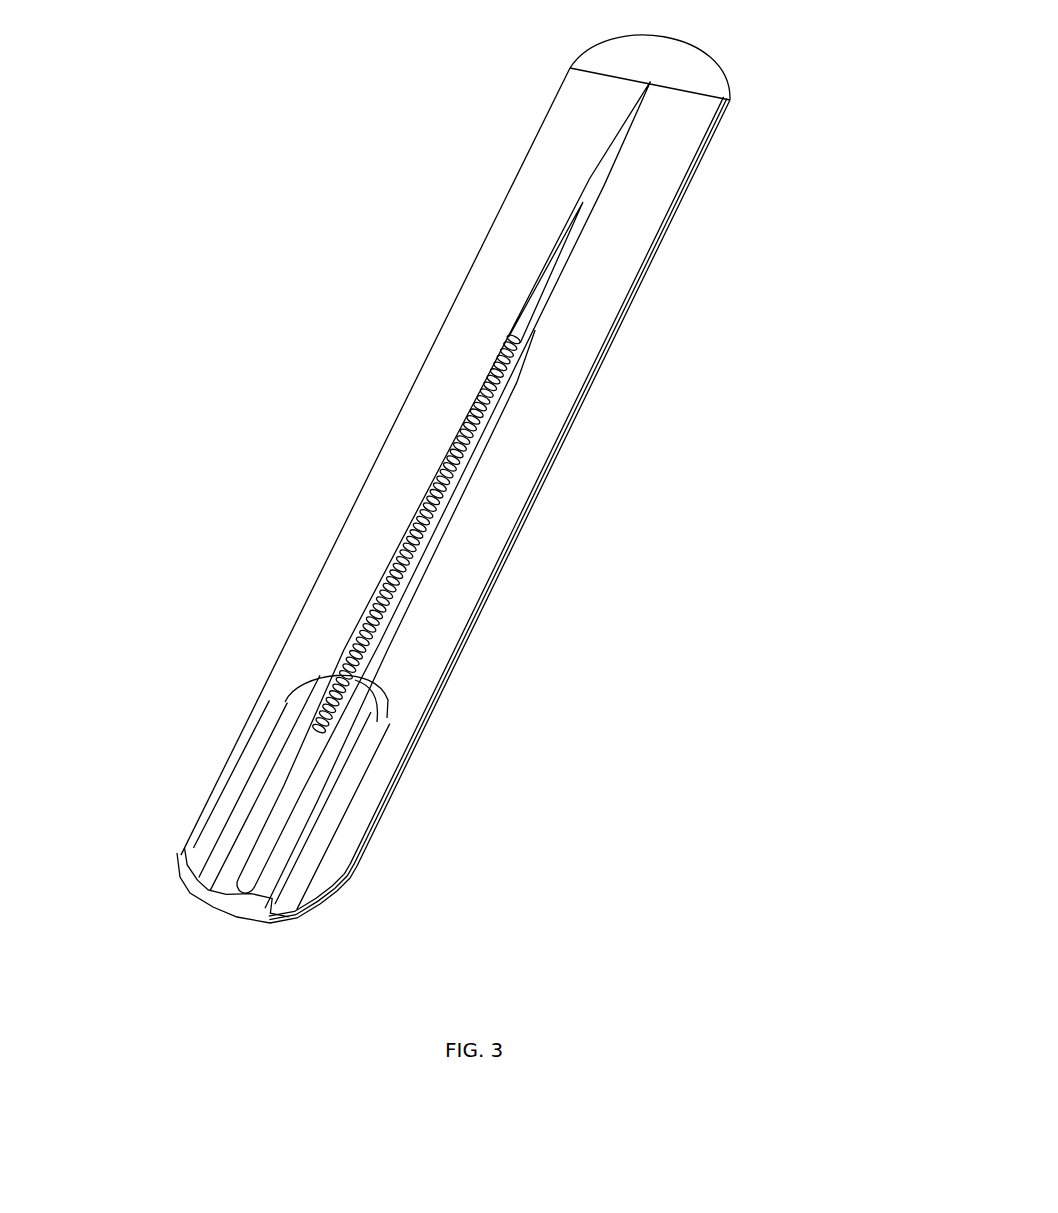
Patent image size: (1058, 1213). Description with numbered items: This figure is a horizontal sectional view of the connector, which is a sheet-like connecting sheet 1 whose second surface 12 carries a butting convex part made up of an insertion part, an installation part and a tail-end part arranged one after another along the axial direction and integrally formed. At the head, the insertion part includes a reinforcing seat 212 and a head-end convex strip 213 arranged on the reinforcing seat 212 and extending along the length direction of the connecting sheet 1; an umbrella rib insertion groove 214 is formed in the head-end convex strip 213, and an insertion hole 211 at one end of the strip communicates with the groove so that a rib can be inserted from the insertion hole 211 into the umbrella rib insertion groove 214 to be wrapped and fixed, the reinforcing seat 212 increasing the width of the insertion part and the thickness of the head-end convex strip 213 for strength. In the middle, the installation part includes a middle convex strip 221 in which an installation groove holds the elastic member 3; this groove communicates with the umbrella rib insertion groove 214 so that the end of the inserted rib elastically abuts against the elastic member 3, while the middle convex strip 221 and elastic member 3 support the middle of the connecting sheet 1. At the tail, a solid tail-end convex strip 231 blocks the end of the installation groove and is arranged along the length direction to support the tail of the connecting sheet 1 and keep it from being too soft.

The connecting sheet 1 is at (532, 182).
The elastic member 3 is at (437, 463).
The second surface 12 is at (473, 555).
The insertion hole 211 is at (232, 895).
The reinforcing seat 212 is at (285, 842).
The head-end convex strip 213 is at (360, 755).
The umbrella rib insertion groove 214 is at (282, 757).
The middle convex strip 221 is at (502, 395).
The tail-end convex strip 231 is at (600, 178).